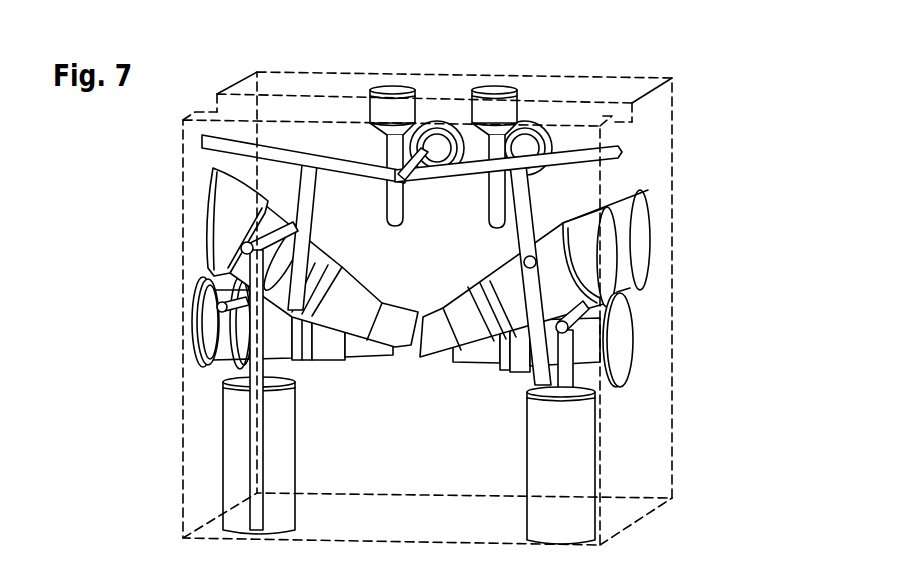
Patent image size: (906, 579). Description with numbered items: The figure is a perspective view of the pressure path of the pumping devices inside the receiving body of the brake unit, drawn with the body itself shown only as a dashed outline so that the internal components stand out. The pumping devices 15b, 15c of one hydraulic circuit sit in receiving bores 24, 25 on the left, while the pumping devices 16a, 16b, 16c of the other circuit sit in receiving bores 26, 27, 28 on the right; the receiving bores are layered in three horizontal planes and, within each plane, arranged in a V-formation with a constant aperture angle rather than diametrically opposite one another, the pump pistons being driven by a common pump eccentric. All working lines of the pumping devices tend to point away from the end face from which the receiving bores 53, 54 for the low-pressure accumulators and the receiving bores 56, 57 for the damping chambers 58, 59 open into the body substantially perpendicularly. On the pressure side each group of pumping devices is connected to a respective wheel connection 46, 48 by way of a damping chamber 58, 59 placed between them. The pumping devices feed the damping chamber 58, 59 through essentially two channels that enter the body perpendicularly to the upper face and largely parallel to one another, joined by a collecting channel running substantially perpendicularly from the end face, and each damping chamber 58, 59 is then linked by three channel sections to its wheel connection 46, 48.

The receiving bore for low-pressure accumulator 53 is at (303, 91).
The receiving bore for low-pressure accumulator 54 is at (508, 91).
The wheel connection 46 is at (395, 85).
The wheel connection 48 is at (490, 85).
The pumping device 15b is at (199, 183).
The receiving bore for pumping device 24 is at (207, 215).
The pumping device 15c is at (182, 315).
The receiving bore for pumping device 25 is at (190, 340).
The damping chamber 58 is at (209, 417).
The receiving bore for damping chamber 56 is at (240, 472).
The receiving bore for pumping device 26 is at (648, 195).
The pumping device 16a is at (658, 213).
The pumping device 16c is at (628, 250).
The receiving bore for pumping device 28 is at (620, 267).
The pumping device 16b is at (646, 325).
The receiving bore for pumping device 27 is at (633, 368).
The damping chamber 59 is at (611, 423).
The receiving bore for damping chamber 57 is at (582, 458).